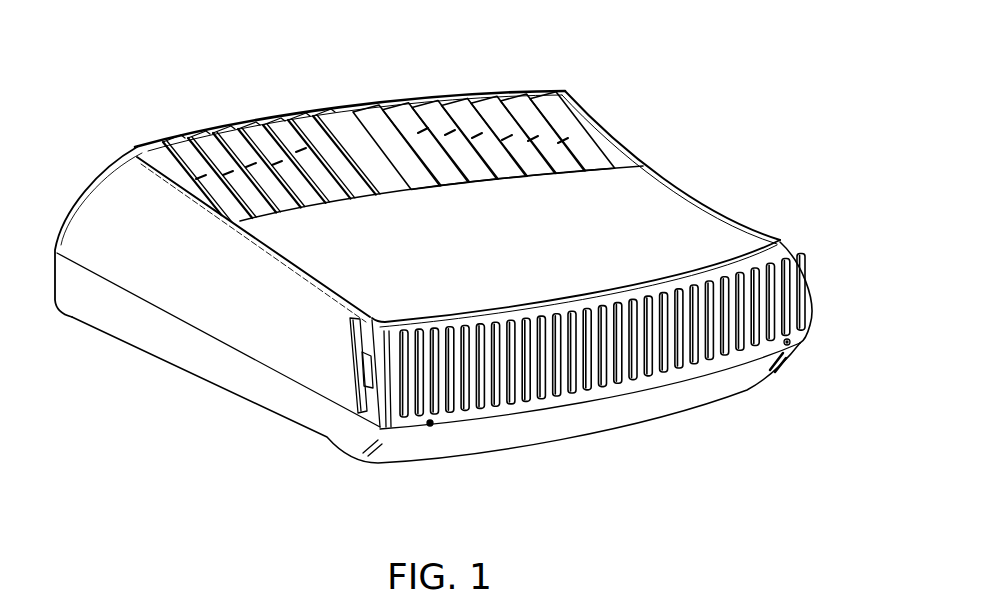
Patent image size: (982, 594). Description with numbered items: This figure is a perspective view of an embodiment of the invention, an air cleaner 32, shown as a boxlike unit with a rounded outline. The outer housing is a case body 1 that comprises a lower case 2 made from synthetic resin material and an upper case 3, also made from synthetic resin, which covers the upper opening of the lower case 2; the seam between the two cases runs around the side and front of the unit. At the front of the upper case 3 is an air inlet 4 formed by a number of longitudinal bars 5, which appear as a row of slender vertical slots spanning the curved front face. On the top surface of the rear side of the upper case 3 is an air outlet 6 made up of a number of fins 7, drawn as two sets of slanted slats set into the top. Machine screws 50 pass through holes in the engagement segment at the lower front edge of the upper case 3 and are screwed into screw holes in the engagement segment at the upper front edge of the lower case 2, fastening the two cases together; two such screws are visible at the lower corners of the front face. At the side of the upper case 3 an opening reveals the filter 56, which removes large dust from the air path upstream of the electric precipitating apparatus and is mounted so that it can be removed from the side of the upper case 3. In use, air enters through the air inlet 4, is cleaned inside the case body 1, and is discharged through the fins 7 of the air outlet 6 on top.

The case body 1 is at (142, 350).
The lower case 2 is at (240, 397).
The upper case 3 is at (212, 327).
The air inlet 4 is at (617, 370).
The longitudinal bars 5 is at (497, 357).
The air outlet 6 is at (318, 150).
The fins 7 is at (252, 138).
The air cleaner 32 is at (714, 93).
The machine screws 50 is at (430, 426).
The filter 56 is at (360, 377).